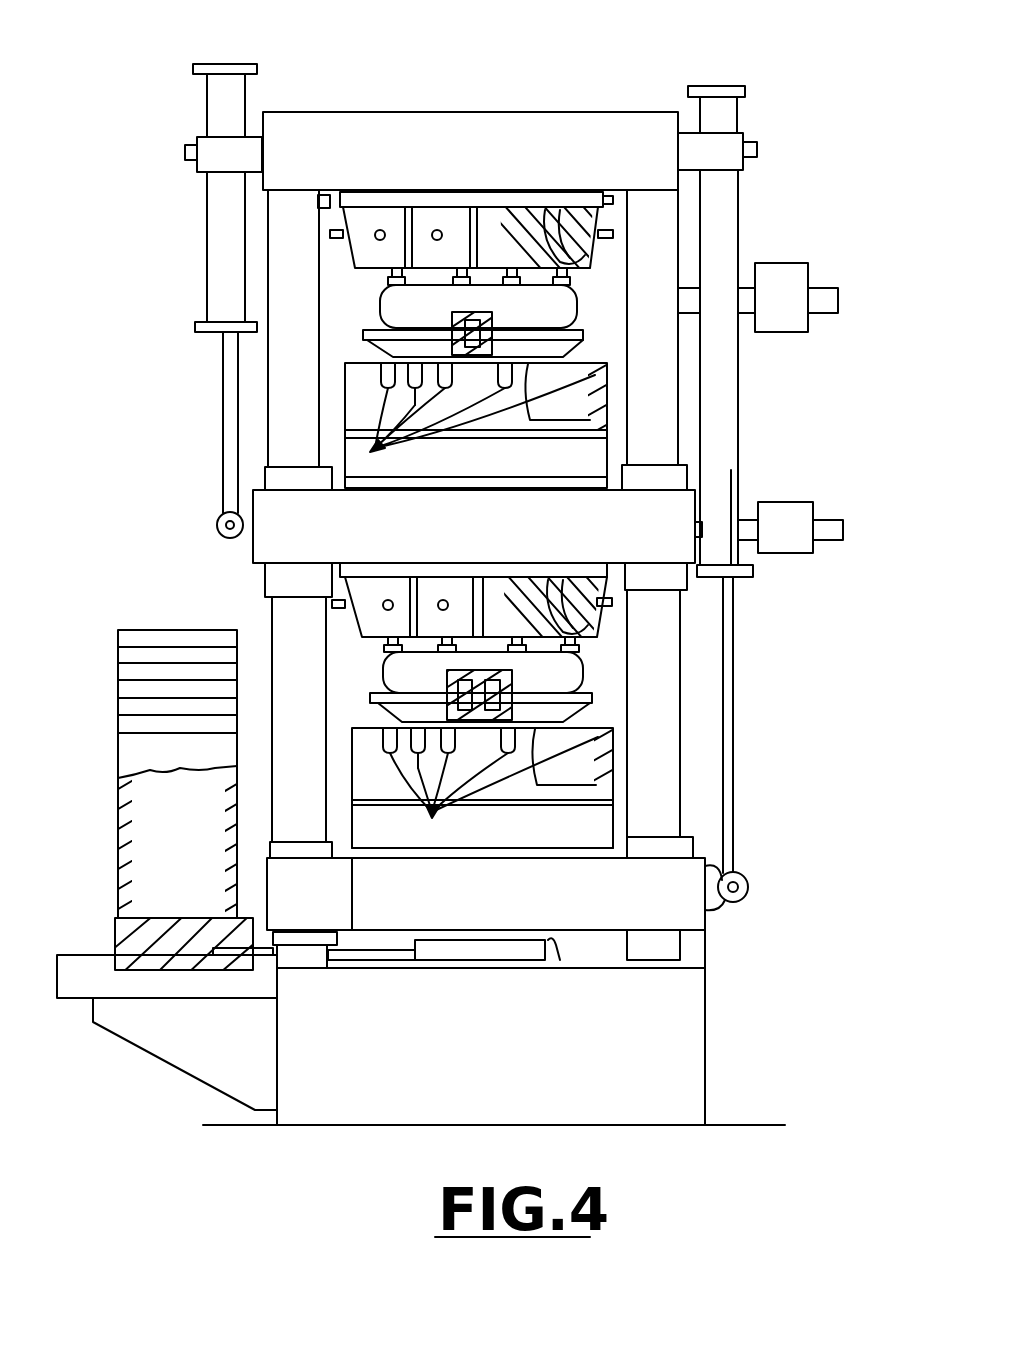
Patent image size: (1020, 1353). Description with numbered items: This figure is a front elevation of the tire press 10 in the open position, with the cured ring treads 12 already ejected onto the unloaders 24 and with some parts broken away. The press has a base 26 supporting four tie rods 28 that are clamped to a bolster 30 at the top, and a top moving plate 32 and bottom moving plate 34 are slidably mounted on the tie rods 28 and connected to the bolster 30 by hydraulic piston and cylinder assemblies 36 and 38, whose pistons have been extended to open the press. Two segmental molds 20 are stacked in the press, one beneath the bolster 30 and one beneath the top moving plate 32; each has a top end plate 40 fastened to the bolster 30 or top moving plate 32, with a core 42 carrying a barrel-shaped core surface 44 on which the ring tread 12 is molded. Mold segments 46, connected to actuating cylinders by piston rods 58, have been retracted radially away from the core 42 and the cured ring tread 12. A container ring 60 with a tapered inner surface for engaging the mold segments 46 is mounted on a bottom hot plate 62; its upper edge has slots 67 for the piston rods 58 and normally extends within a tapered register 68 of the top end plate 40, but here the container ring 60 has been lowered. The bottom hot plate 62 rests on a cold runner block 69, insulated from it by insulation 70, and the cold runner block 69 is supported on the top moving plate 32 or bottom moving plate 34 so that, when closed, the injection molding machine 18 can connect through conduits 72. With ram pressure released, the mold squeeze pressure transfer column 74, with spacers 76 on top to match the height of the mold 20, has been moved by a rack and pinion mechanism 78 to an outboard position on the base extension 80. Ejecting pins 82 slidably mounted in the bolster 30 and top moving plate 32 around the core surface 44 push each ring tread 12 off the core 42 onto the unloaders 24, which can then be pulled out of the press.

The tire press 10 is at (768, 66).
The ring tread 12 is at (552, 318).
The injection molding machine 18 is at (780, 275).
The segmental mold 20 is at (590, 205).
The unloader 24 is at (580, 332).
The base 26 is at (690, 1045).
The tie rod 28 is at (320, 727).
The bolster 30 is at (325, 128).
The top moving plate 32 is at (262, 552).
The bottom moving plate 34 is at (698, 913).
The hydraulic piston and cylinder assembly 36 is at (217, 225).
The hydraulic piston and cylinder assembly 38 is at (728, 200).
The top end plate 40 is at (435, 195).
The core 42 is at (525, 212).
The core surface 44 is at (565, 215).
The mold segment 46 is at (423, 212).
The piston rod 58 is at (432, 237).
The container ring 60 is at (612, 395).
The bottom hot plate 62 is at (560, 425).
The slot 67 is at (477, 605).
The tapered register 68 is at (322, 205).
The cold runner block 69 is at (598, 474).
The insulation 70 is at (600, 437).
The conduit 72 is at (690, 300).
The mold squeeze pressure transfer column 74 is at (125, 830).
The spacer 76 is at (130, 693).
The rack and pinion mechanism 78 is at (485, 955).
The base extension 80 is at (84, 998).
The ejecting pin 82 is at (455, 283).